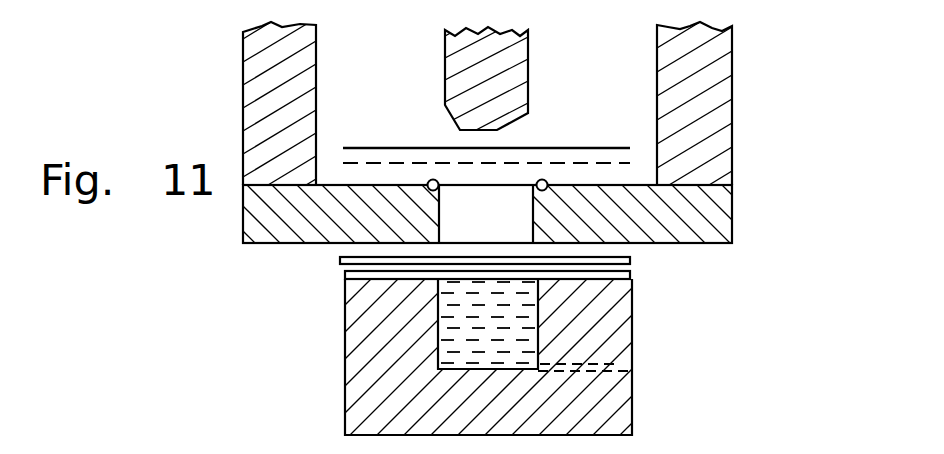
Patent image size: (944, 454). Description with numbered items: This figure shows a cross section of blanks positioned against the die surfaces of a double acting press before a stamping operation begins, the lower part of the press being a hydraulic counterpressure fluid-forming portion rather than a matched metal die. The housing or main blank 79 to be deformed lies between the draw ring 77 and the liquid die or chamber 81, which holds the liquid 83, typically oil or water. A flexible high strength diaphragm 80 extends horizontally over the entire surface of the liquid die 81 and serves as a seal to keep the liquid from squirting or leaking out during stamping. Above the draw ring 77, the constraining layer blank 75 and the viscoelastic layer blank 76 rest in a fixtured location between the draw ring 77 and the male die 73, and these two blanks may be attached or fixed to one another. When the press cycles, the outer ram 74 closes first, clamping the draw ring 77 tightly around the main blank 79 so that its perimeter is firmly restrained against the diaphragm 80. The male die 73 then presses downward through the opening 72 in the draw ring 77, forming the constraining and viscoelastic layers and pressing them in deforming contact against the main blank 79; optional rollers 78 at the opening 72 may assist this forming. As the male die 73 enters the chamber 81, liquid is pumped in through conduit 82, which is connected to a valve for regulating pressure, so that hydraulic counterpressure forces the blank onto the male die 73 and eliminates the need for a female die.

The opening 72 is at (470, 222).
The male die 73 is at (520, 52).
The outer ram 74 is at (720, 100).
The constraining layer blank 75 is at (541, 147).
The viscoelastic layer blank 76 is at (570, 163).
The draw ring 77 is at (720, 213).
The rollers 78 is at (538, 181).
The main blank 79 is at (630, 260).
The flexible high strength diaphragm 80 is at (630, 273).
The liquid die or chamber 81 is at (624, 420).
The conduit 82 is at (618, 364).
The liquid 83 is at (455, 320).